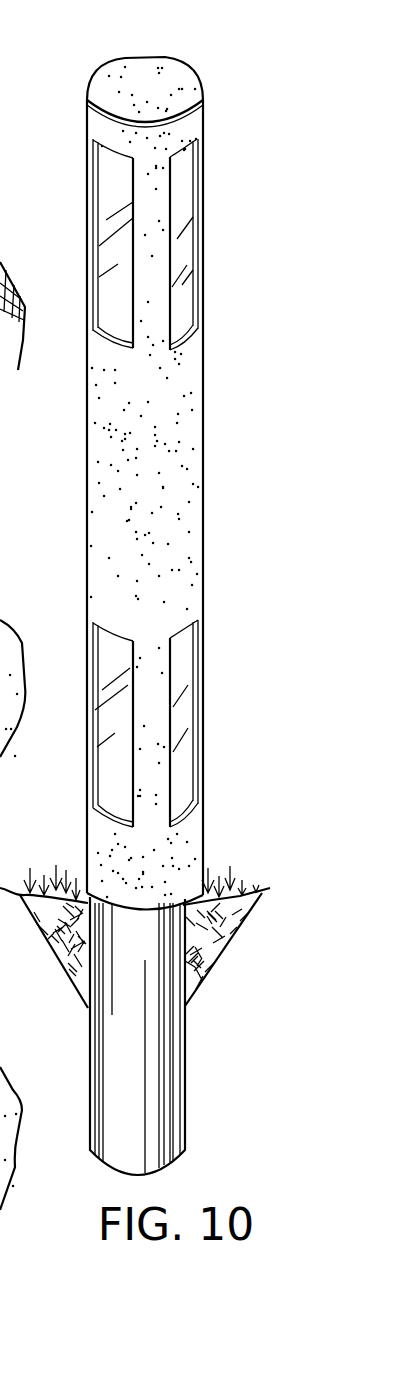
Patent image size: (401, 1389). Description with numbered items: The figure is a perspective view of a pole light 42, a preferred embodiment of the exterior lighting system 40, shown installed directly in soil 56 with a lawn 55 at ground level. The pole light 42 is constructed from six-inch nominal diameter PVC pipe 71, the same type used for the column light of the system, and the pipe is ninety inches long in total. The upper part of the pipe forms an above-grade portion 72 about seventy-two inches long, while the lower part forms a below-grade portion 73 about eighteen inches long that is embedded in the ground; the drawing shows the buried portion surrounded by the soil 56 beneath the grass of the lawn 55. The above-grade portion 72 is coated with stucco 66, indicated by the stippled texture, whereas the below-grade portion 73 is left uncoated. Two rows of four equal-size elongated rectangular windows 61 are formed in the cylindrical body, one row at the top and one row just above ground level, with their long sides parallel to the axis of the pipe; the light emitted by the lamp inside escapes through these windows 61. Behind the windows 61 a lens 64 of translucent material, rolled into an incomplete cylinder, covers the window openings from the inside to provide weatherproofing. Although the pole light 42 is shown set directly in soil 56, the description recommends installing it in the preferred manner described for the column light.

The exterior lighting system 40 is at (90, 44).
The pole light 42 is at (86, 467).
The lawn 55 is at (225, 870).
The soil 56 is at (58, 974).
The windows 61 is at (113, 200).
The lens 64 is at (108, 231).
The stucco 66 is at (190, 433).
The PVC pipe 71 is at (90, 1086).
The above-grade portion 72 is at (82, 826).
The below-grade portion 73 is at (90, 1046).